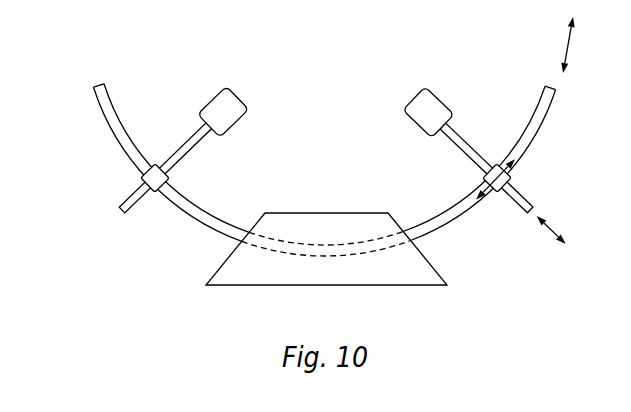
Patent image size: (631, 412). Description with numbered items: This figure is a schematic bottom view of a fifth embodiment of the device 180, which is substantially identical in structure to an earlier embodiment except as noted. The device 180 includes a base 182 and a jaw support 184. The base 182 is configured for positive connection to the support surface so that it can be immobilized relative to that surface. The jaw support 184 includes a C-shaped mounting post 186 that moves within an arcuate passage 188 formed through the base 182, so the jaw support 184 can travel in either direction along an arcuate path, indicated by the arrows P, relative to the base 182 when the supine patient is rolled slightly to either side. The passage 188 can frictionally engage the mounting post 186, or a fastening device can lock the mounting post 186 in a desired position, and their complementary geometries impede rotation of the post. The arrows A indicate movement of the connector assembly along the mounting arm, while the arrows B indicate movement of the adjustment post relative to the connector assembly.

The device 180 is at (132, 242).
The base 182 is at (328, 213).
The jaw support 184 is at (112, 163).
The C-shaped mounting post 186 is at (94, 86).
The arcuate passage 188 is at (278, 240).
The arrows A is at (510, 153).
The arrows B is at (542, 229).
The arrows P is at (567, 45).